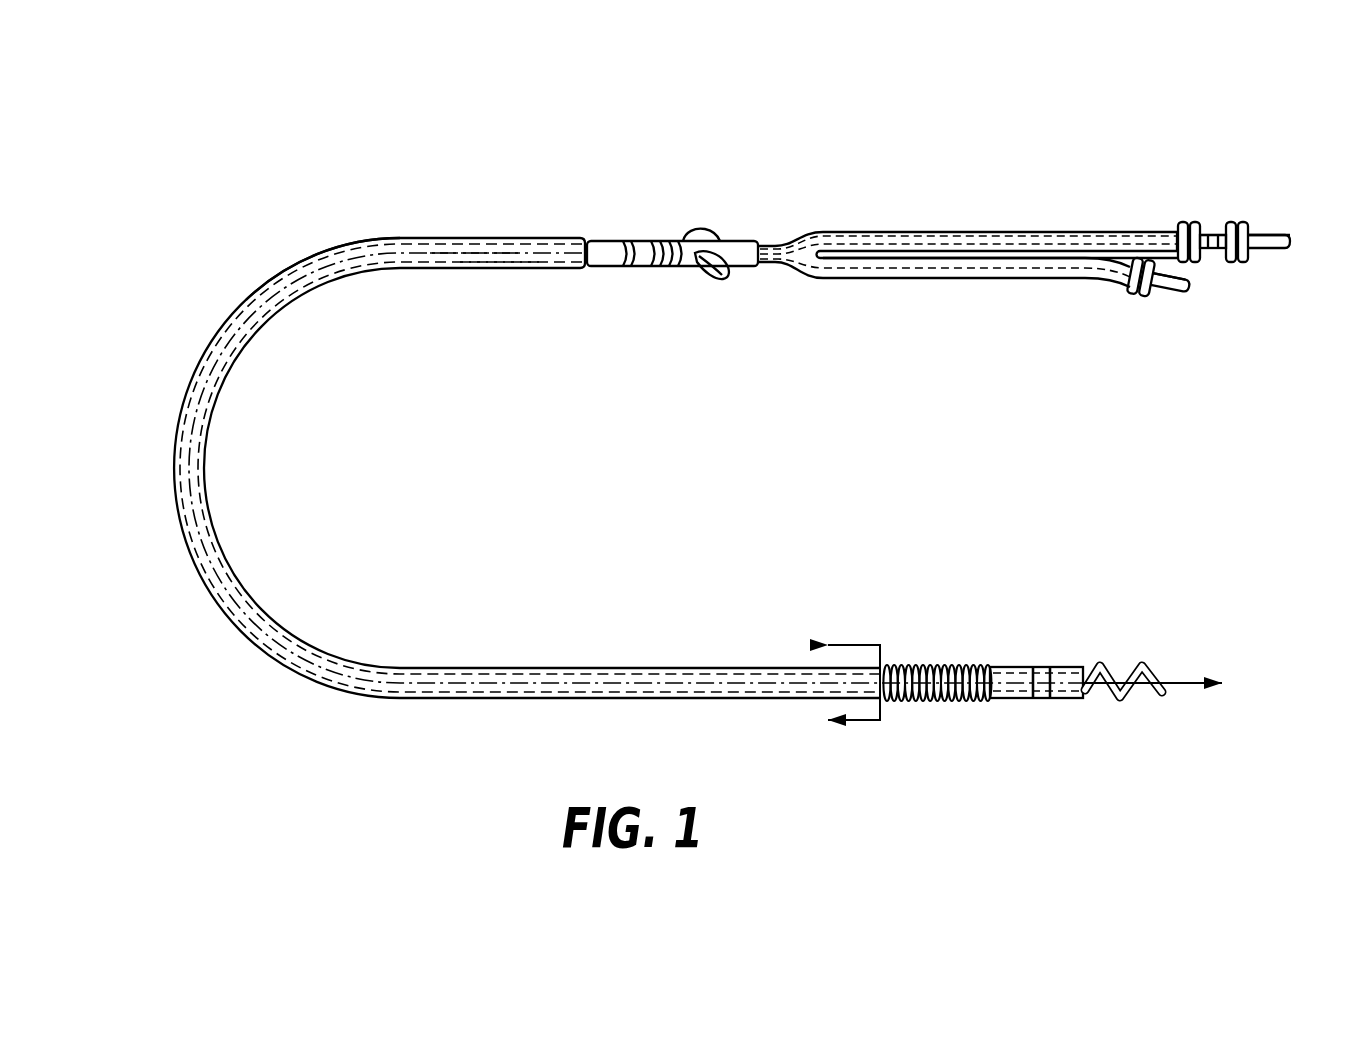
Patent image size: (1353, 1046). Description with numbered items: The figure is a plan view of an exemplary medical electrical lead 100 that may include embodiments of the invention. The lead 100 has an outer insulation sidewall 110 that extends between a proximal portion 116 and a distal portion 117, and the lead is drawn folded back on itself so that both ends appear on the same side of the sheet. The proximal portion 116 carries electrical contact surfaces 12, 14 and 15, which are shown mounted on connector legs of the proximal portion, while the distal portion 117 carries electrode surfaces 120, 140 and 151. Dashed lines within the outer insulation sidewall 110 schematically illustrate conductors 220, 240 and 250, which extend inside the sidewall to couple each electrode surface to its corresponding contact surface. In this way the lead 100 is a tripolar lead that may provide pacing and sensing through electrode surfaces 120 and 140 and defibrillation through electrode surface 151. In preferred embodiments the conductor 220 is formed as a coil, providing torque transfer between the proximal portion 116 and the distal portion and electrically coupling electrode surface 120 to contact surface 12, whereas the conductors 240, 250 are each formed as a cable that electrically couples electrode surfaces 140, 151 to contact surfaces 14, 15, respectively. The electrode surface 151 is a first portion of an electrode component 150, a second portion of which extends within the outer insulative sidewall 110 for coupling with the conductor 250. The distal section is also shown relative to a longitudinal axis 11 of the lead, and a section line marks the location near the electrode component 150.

The medical electrical lead 100 is at (210, 240).
The outer insulation sidewall 110 is at (178, 497).
The proximal portion 116 is at (777, 200).
The distal portion 117 is at (808, 558).
The conductor 220 is at (330, 258).
The conductor 240 is at (495, 268).
The conductor 250 is at (430, 250).
The electrical contact surface 12 is at (1277, 232).
The electrical contact surface 14 is at (1213, 232).
The electrical contact surface 15 is at (1167, 291).
The electrode component 150 is at (913, 663).
The electrode surface 151 is at (962, 702).
The electrode surface 140 is at (1036, 665).
The electrode surface 120 is at (1122, 665).
The longitudinal axis 11 is at (1190, 685).